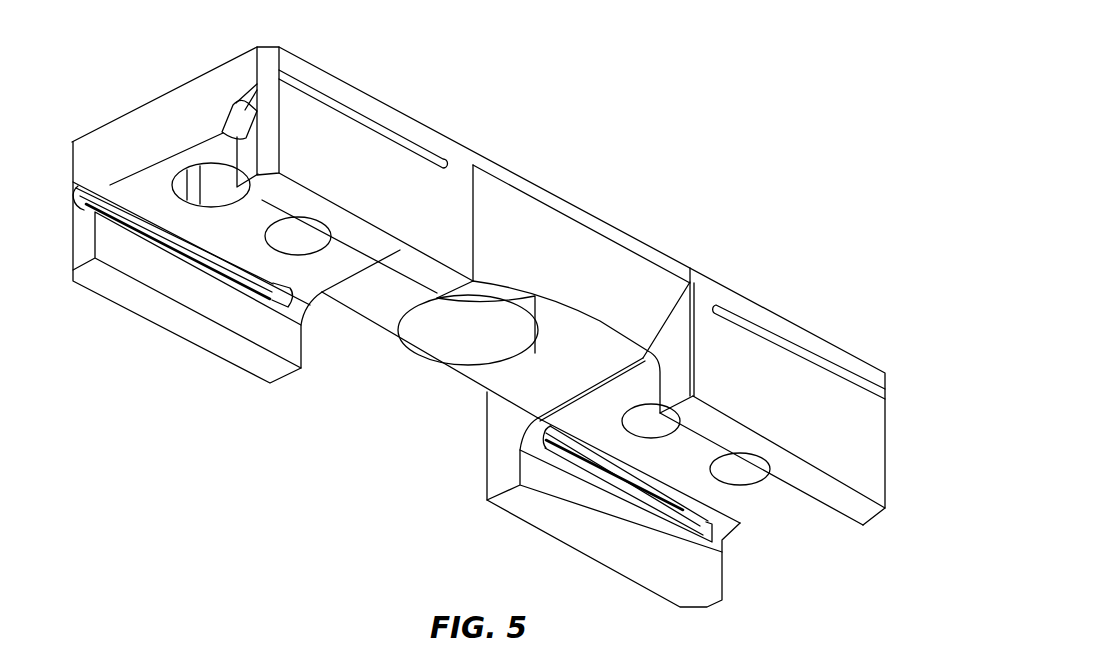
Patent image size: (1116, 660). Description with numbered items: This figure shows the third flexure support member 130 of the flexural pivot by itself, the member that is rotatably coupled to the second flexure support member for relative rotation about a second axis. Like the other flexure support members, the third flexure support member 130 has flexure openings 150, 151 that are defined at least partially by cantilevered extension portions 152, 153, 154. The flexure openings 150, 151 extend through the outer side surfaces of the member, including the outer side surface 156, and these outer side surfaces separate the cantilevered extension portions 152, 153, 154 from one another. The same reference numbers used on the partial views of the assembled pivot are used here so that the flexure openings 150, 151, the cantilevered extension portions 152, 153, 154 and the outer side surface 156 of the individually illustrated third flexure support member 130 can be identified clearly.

The third flexure support member 130 is at (611, 151).
The flexure opening 150 is at (189, 249).
The flexure opening 151 is at (363, 111).
The cantilevered extension portion 152 is at (126, 295).
The cantilevered extension portion 153 is at (157, 113).
The cantilevered extension portion 154 is at (323, 136).
The outer side surface 156 is at (354, 150).